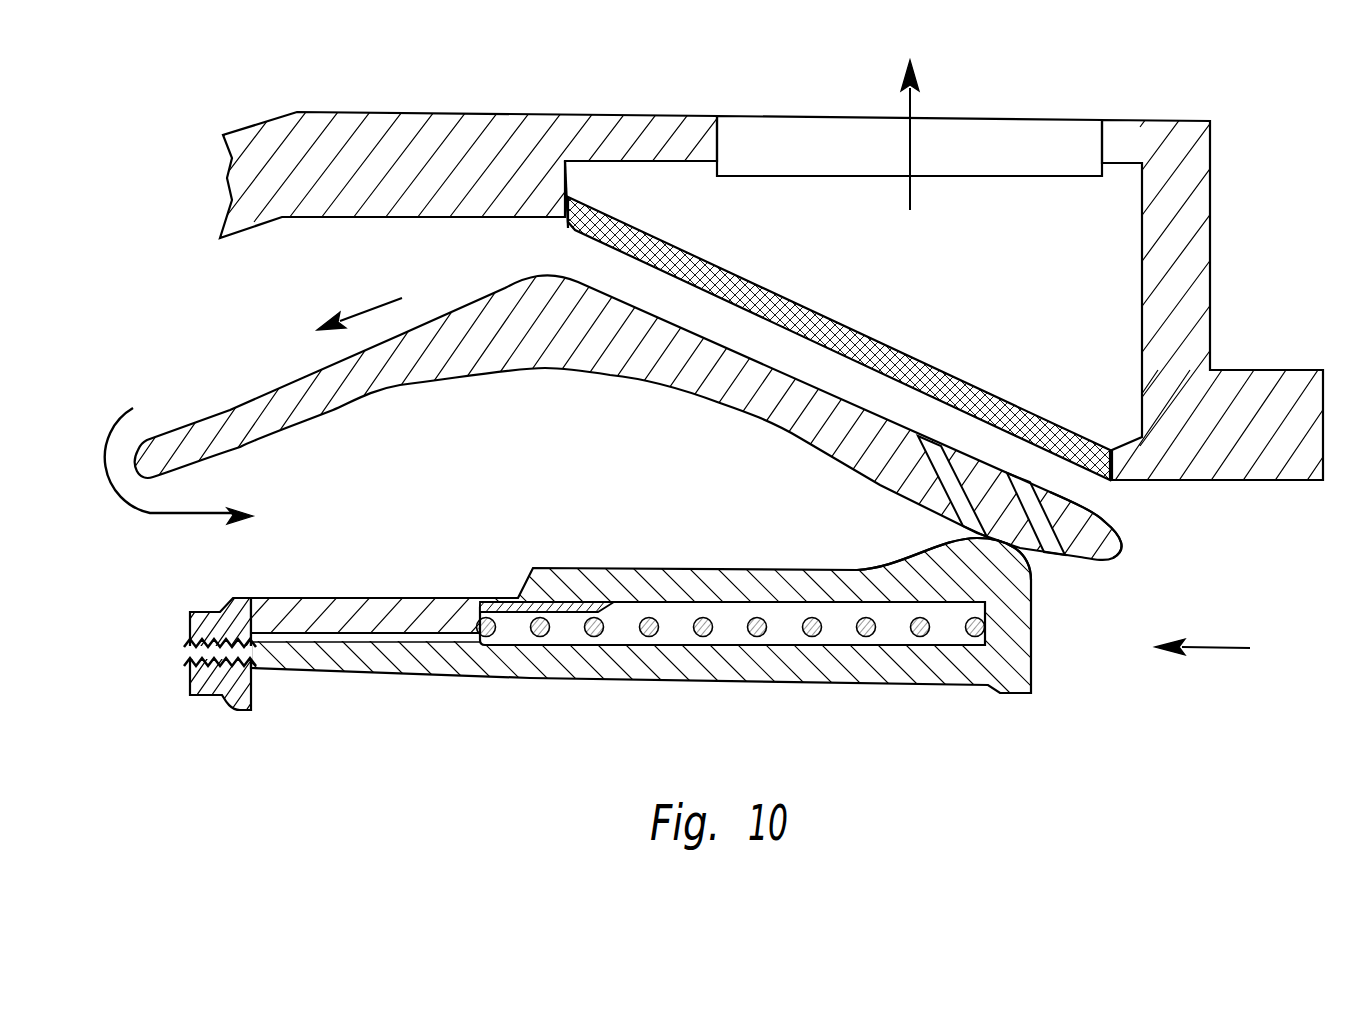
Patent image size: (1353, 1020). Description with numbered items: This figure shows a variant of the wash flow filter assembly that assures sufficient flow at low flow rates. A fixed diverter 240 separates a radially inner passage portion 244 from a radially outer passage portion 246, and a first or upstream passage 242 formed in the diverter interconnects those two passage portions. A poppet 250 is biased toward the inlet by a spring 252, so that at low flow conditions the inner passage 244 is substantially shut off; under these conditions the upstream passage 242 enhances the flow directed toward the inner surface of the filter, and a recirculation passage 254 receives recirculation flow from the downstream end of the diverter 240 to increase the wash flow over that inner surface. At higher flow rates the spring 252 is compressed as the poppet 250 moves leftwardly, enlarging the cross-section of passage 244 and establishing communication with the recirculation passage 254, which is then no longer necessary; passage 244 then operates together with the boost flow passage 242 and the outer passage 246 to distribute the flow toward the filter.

The fixed diverter 240 is at (664, 416).
The upstream passage 242 is at (1037, 520).
The radially inner passage portion 244 is at (1060, 578).
The radially outer passage portion 246 is at (1140, 512).
The poppet 250 is at (904, 683).
The spring 252 is at (746, 627).
The recirculation passage 254 is at (934, 470).